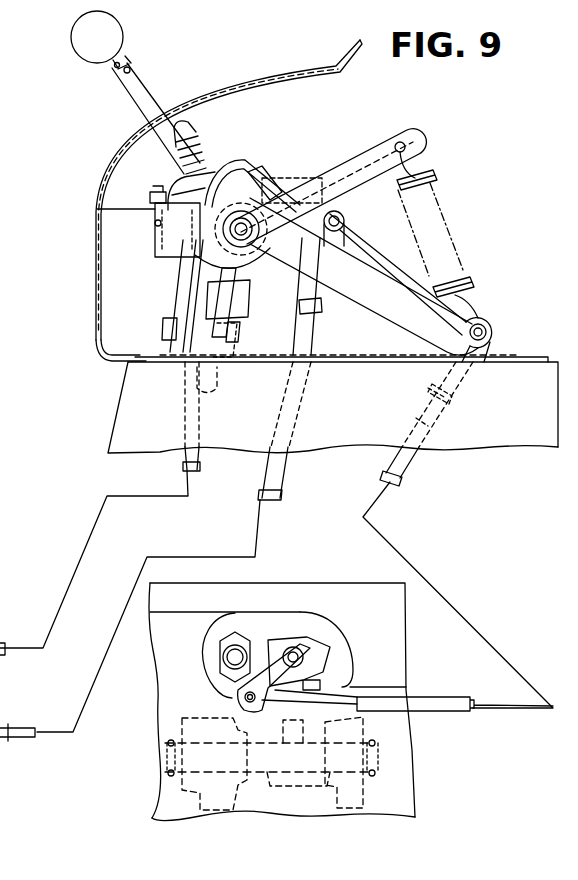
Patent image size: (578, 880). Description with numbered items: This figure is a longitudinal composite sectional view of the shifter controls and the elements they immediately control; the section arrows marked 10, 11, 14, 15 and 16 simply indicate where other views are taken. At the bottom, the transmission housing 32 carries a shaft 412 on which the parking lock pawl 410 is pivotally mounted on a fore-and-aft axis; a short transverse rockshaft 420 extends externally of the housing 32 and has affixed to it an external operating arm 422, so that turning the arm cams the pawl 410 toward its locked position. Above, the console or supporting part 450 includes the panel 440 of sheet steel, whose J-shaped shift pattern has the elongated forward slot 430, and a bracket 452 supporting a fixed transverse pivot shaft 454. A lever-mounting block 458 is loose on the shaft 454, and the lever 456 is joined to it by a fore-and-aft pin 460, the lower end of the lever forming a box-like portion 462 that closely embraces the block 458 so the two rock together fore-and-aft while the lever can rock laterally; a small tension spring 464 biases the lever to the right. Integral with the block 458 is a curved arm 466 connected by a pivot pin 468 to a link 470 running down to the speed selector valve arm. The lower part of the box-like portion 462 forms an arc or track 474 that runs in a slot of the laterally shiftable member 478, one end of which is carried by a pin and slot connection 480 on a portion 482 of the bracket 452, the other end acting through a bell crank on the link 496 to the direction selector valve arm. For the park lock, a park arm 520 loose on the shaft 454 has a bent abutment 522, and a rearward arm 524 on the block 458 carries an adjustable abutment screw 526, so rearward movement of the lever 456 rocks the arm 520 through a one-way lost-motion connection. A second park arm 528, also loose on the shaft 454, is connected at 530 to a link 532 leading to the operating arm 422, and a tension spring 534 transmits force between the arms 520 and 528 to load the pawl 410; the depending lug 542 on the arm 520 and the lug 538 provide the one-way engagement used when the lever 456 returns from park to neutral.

The section line 10- 10 is at (55, 27).
The section line 11- 11 is at (173, 127).
The section line 14- 14 is at (281, 576).
The section line 15- 15 is at (193, 21).
The section line 16- 16 is at (523, 101).
The transmission housing 32 is at (428, 812).
The parking lock pawl 410 is at (270, 796).
The shaft 412 is at (376, 772).
The rockshaft 420 is at (293, 647).
The external operating arm 422 is at (240, 707).
The elongated fore-and-aft slot 430 is at (224, 80).
The panel 440 is at (212, 82).
The console or supporting part 450 is at (127, 383).
The bracket 452 is at (183, 300).
The pivot shaft 454 is at (246, 212).
The lever 456 is at (132, 91).
The lever-mounting member 458 is at (233, 165).
The pin 460 is at (254, 182).
The box-like portion 462 is at (185, 185).
The tension spring 464 is at (178, 137).
The curved arm 466 is at (303, 185).
The pivot pin 468 is at (344, 221).
The link 470 is at (318, 325).
The arc or track 474 is at (212, 264).
The laterally shiftable member 478 is at (238, 310).
The pin and slot connection 480 is at (205, 285).
The bracket portion 482 is at (240, 362).
The link 496 is at (198, 466).
The park lock arm 520 is at (409, 134).
The abutment 522 is at (154, 236).
The rearwardly extending arm 524 is at (150, 199).
The adjustable abutment screw 526 is at (155, 223).
The second park lock arm 528 is at (366, 287).
The connection 530 is at (482, 330).
The link 532 is at (402, 468).
The tension spring 534 is at (432, 175).
The lug 538 is at (96, 209).
The depending lug 542 is at (330, 258).